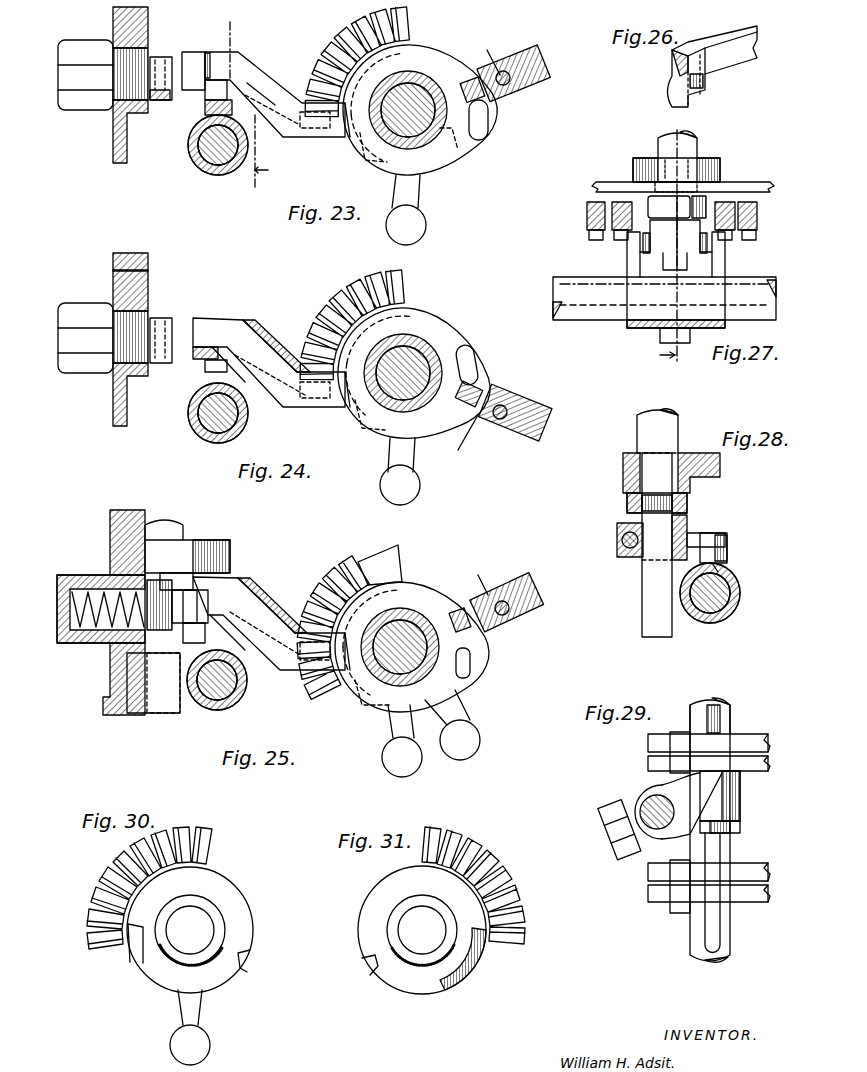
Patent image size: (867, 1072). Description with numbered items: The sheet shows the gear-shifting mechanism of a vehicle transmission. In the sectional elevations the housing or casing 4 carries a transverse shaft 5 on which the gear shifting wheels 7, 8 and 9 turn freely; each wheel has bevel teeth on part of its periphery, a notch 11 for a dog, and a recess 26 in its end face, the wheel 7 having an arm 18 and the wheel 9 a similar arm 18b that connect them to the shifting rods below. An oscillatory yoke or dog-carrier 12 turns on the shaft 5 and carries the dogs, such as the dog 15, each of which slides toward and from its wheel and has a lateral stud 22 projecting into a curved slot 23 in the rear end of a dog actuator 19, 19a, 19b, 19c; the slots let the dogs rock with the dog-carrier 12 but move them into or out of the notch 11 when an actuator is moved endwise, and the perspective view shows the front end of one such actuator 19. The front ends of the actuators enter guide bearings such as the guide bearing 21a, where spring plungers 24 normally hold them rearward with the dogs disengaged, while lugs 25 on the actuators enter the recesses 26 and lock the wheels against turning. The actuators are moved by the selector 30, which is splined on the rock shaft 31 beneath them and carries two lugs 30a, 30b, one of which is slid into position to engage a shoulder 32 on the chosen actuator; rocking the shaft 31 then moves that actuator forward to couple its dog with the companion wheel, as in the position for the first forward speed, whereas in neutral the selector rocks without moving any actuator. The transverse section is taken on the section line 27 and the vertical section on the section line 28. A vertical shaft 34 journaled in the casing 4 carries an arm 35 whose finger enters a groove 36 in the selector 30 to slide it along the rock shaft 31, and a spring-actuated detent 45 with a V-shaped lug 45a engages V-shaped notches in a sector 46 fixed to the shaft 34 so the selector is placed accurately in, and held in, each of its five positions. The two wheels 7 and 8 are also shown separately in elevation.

In FIG. 23, the housing or casing 4 is at (113, 140).
In FIG. 24, the housing or casing 4 is at (113, 407).
In FIG. 25, the housing or casing 4 is at (110, 675).
In FIG. 23, the shaft 5 is at (408, 135).
In FIG. 24, the shaft 5 is at (420, 355).
In FIG. 25, the shaft 5 is at (380, 668).
In FIG. 30, the shaft 5 is at (190, 930).
In FIG. 31, the shaft 5 is at (422, 930).
In FIG. 23, the gear shifting wheel 7 is at (420, 108).
In FIG. 24, the gear shifting wheel 7 is at (415, 375).
In FIG. 25, the gear shifting wheel 7 is at (412, 647).
In FIG. 30, the gear shifting wheel 7 is at (190, 930).
In FIG. 25, the gear shifting wheel 8 is at (380, 565).
In FIG. 31, the gear shifting wheel 8 is at (422, 930).
In FIG. 23, the gear shifting wheel 9 is at (405, 30).
In FIG. 24, the gear shifting wheel 9 is at (405, 295).
In FIG. 25, the gear shifting wheel 9 is at (340, 580).
In FIG. 30, the gear shifting wheel 9 is at (149, 888).
In FIG. 31, the gear shifting wheel 9 is at (473, 885).
In FIG. 23, the notch 11 is at (447, 141).
In FIG. 30, the notch 11 is at (250, 963).
In FIG. 31, the notch 11 is at (365, 962).
In FIG. 23, the oscillatory yoke or dog-carrier 12 is at (540, 70).
In FIG. 24, the oscillatory yoke or dog-carrier 12 is at (530, 398).
In FIG. 25, the oscillatory yoke or dog-carrier 12 is at (530, 618).
In FIG. 23, the dog 15 is at (487, 50).
In FIG. 24, the dog 15 is at (465, 440).
In FIG. 25, the dog 15 is at (479, 575).
In FIG. 25, the arm 18 is at (402, 741).
In FIG. 30, the arm 18 is at (190, 1027).
In FIG. 23, the arm 18b is at (418, 193).
In FIG. 24, the arm 18b is at (400, 471).
In FIG. 25, the arm 18b is at (452, 725).
In FIG. 25, the dog actuator 19 is at (90, 575).
In FIG. 26, the dog actuator 19 is at (733, 62).
In FIG. 29, the dog actuator 19 is at (750, 738).
In FIG. 27, the dog actuator 19a is at (730, 200).
In FIG. 29, the dog actuator 19a is at (760, 764).
In FIG. 24, the dog actuator 19b is at (262, 335).
In FIG. 25, the dog actuator 19b is at (262, 600).
In FIG. 27, the dog actuator 19b is at (622, 200).
In FIG. 29, the dog actuator 19b is at (755, 870).
In FIG. 23, the dog actuator 19c is at (272, 110).
In FIG. 24, the dog actuator 19c is at (270, 375).
In FIG. 25, the dog actuator 19c is at (269, 633).
In FIG. 27, the dog actuator 19c is at (595, 200).
In FIG. 29, the dog actuator 19c is at (755, 902).
In FIG. 23, the guide bearing 21a is at (158, 100).
In FIG. 24, the guide bearing 21a is at (160, 365).
In FIG. 25, the guide bearing 21a is at (162, 646).
In FIG. 23, the lateral stud 22 is at (462, 80).
In FIG. 24, the lateral stud 22 is at (458, 398).
In FIG. 25, the lateral stud 22 is at (452, 612).
In FIG. 23, the curved slot 23 is at (487, 130).
In FIG. 24, the curved slot 23 is at (478, 358).
In FIG. 25, the curved slot 23 is at (470, 655).
In FIG. 23, the spring plunger 24 is at (160, 58).
In FIG. 24, the spring plunger 24 is at (160, 322).
In FIG. 25, the spring plunger 24 is at (95, 643).
In FIG. 23, the lug 25 is at (342, 138).
In FIG. 24, the lug 25 is at (330, 405).
In FIG. 25, the lug 25 is at (330, 668).
In FIG. 23, the recess 26 is at (370, 162).
In FIG. 24, the recess 26 is at (370, 430).
In FIG. 25, the recess 26 is at (378, 708).
In FIG. 30, the recess 26 is at (140, 965).
In FIG. 31, the recess 26 is at (478, 960).
In FIG. 23, the section line 27 is at (538, 115).
In FIG. 24, the section line 27 is at (503, 420).
In FIG. 25, the section line 27 is at (508, 600).
In FIG. 27, the section line 28 is at (674, 244).
In FIG. 23, the selector 30 is at (188, 148).
In FIG. 24, the selector 30 is at (200, 430).
In FIG. 25, the selector 30 is at (240, 688).
In FIG. 27, the selector 30 is at (630, 300).
In FIG. 28, the selector 30 is at (740, 583).
In FIG. 29, the selector 30 is at (742, 808).
In FIG. 24, the lug 30a is at (205, 345).
In FIG. 25, the lug 30a is at (230, 600).
In FIG. 27, the lug 30a is at (635, 250).
In FIG. 29, the lug 30a is at (742, 826).
In FIG. 23, the lug 30b is at (245, 70).
In FIG. 27, the lug 30b is at (718, 258).
In FIG. 28, the lug 30b is at (728, 555).
In FIG. 29, the lug 30b is at (715, 735).
In FIG. 23, the rock shaft 31 is at (214, 162).
In FIG. 24, the rock shaft 31 is at (245, 425).
In FIG. 25, the rock shaft 31 is at (216, 700).
In FIG. 27, the rock shaft 31 is at (664, 298).
In FIG. 28, the rock shaft 31 is at (730, 603).
In FIG. 29, the rock shaft 31 is at (690, 928).
In FIG. 23, the shoulder 32 is at (205, 108).
In FIG. 24, the shoulder 32 is at (200, 359).
In FIG. 25, the shoulder 32 is at (200, 643).
In FIG. 27, the shoulder 32 is at (615, 236).
In FIG. 29, the shoulder 32 is at (680, 733).
In FIG. 25, the vertical shaft 34 is at (176, 581).
In FIG. 27, the vertical shaft 34 is at (697, 150).
In FIG. 28, the vertical shaft 34 is at (657, 523).
In FIG. 29, the vertical shaft 34 is at (648, 800).
In FIG. 24, the arm 35 is at (228, 372).
In FIG. 25, the arm 35 is at (208, 605).
In FIG. 27, the arm 35 is at (677, 233).
In FIG. 28, the arm 35 is at (700, 533).
In FIG. 29, the arm 35 is at (678, 806).
In FIG. 23, the groove 36 is at (261, 94).
In FIG. 24, the groove 36 is at (215, 372).
In FIG. 25, the groove 36 is at (243, 627).
In FIG. 27, the groove 36 is at (663, 260).
In FIG. 28, the groove 36 is at (735, 565).
In FIG. 29, the groove 36 is at (742, 788).
In FIG. 27, the spring-actuated detent 45 is at (695, 190).
In FIG. 27, the V-shaped lug 45a is at (660, 150).
In FIG. 25, the sector 46 is at (190, 540).
In FIG. 27, the sector 46 is at (720, 158).
In FIG. 28, the sector 46 is at (720, 465).